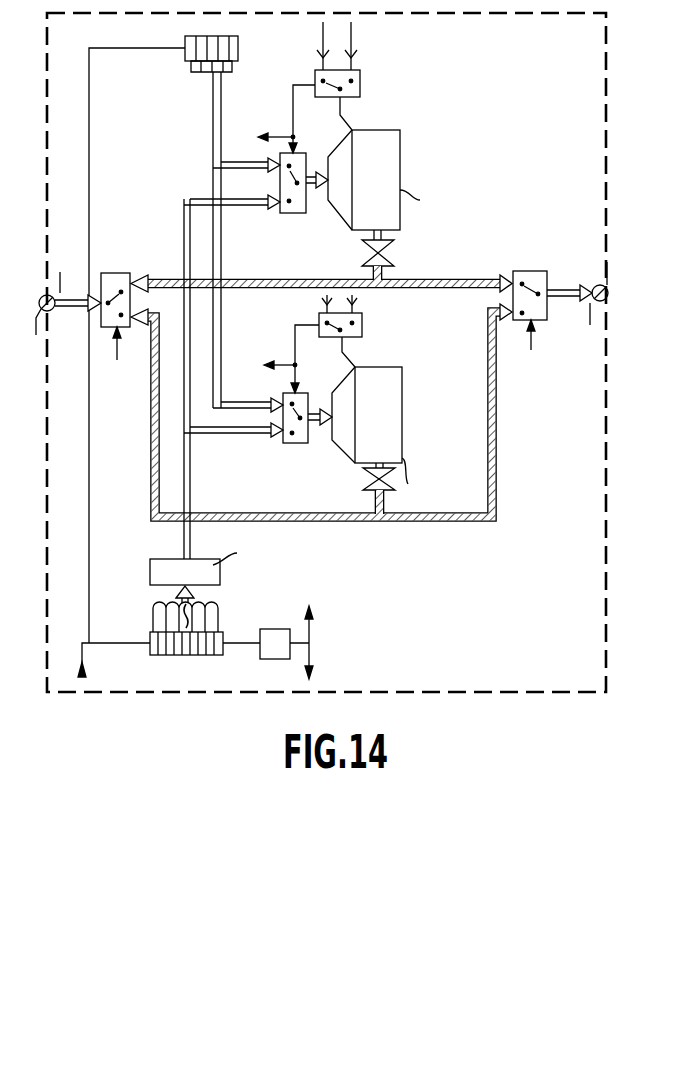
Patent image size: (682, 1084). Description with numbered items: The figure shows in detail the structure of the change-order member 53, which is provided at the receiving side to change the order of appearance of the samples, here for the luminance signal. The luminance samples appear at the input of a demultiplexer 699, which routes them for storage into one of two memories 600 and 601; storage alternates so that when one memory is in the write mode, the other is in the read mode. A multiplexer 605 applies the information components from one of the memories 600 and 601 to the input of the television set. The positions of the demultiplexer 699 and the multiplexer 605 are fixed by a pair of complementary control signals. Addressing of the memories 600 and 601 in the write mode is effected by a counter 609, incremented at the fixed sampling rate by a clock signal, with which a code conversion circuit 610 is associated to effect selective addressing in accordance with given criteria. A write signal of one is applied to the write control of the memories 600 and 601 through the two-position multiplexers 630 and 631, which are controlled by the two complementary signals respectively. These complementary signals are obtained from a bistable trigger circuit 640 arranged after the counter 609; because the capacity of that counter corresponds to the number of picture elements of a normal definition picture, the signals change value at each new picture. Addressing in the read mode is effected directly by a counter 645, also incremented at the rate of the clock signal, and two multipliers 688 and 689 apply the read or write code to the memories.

The change-order member 53 is at (585, 584).
The counter 645 is at (238, 50).
The two-position multiplexer 630 is at (360, 70).
The multiplier 688 is at (292, 213).
The memory 600 is at (400, 157).
The demultiplexer 699 is at (112, 273).
The multiplexer 605 is at (533, 271).
The two-position multiplexer 631 is at (362, 327).
The multiplier 689 is at (296, 443).
The memory 601 is at (402, 433).
The code conversion circuit 610 is at (150, 572).
The counter 609 is at (166, 655).
The bistable trigger circuit 640 is at (272, 659).